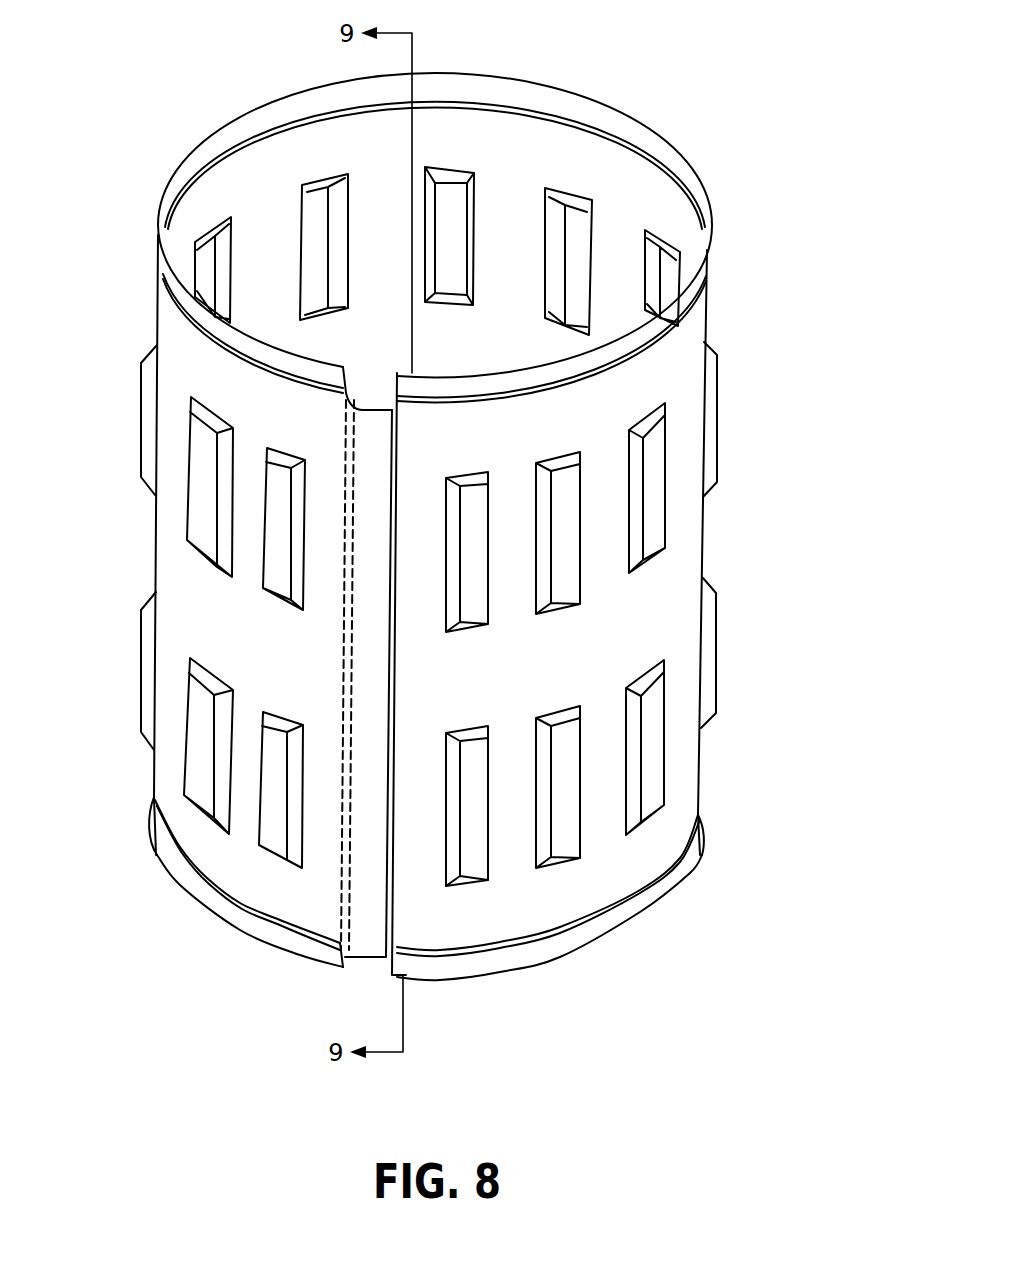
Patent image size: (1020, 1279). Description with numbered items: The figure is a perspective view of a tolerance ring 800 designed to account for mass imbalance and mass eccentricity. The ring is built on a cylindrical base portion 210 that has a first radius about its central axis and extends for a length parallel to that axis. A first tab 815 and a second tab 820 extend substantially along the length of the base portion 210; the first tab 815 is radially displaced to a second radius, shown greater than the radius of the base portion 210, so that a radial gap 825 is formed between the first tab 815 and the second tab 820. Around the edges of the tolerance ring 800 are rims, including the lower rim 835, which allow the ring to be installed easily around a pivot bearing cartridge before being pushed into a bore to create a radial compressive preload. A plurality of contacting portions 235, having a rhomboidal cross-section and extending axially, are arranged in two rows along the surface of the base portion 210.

The tolerance ring 800 is at (752, 144).
The base portion 210 is at (175, 334).
The contacting portions 235 is at (660, 463).
The first tab 815 is at (368, 873).
The second tab 820 is at (403, 918).
The radial gap 825 is at (388, 927).
The lower rim 835 is at (648, 902).